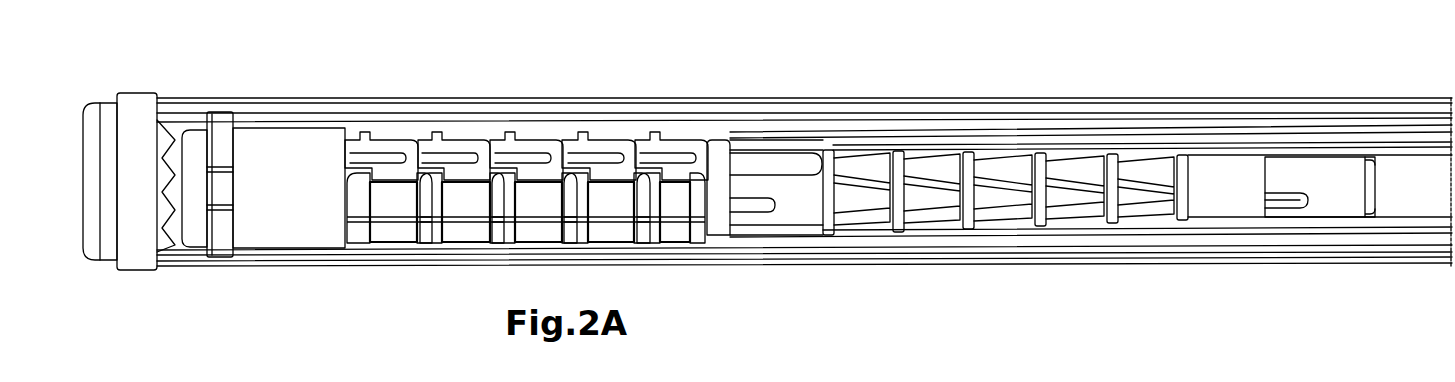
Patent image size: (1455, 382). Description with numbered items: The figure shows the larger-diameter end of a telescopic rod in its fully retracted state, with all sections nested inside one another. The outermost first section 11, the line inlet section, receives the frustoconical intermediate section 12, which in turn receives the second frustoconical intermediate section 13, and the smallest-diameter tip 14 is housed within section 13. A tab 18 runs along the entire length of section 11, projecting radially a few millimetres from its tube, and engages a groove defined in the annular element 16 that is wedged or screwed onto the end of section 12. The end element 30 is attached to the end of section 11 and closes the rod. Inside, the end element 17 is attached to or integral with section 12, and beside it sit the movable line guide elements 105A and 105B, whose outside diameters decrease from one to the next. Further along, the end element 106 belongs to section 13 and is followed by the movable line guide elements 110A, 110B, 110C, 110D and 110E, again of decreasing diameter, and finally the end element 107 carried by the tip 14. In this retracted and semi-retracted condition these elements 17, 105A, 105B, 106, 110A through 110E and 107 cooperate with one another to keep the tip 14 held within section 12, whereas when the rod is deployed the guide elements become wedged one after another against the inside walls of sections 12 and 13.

The first section 11 is at (302, 267).
The intermediate section 12 is at (617, 125).
The intermediate section 13 is at (1262, 148).
The tip 14 is at (1392, 182).
The annular element 16 is at (223, 233).
The end element 17 is at (300, 143).
The tab 18 is at (853, 110).
The end element 30 is at (138, 253).
The movable line guide element 105A is at (365, 232).
The movable line guide element 105B is at (461, 150).
The end element 106 is at (787, 168).
The end element 107 is at (1342, 192).
The movable line guide element 110A is at (868, 197).
The movable line guide element 110B is at (945, 168).
The movable line guide element 110C is at (1015, 170).
The movable line guide element 110D is at (1080, 170).
The movable line guide element 110E is at (1150, 173).